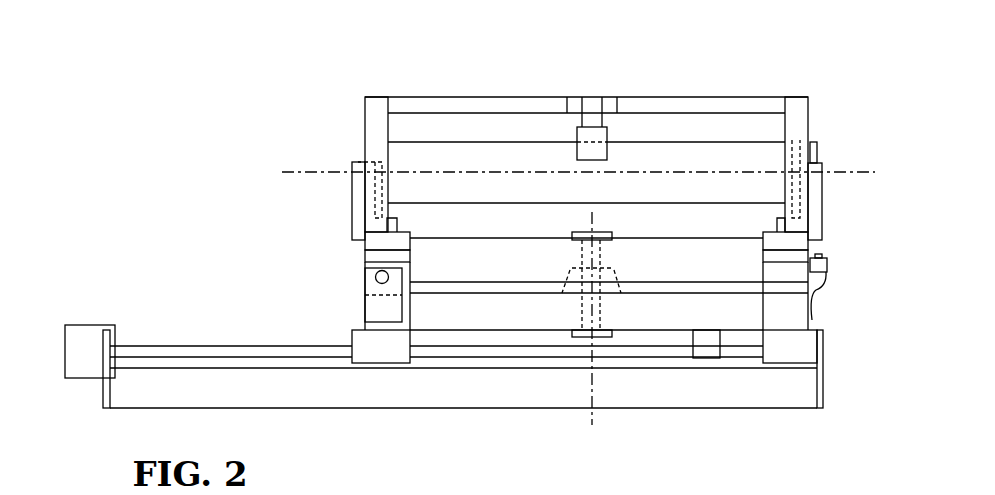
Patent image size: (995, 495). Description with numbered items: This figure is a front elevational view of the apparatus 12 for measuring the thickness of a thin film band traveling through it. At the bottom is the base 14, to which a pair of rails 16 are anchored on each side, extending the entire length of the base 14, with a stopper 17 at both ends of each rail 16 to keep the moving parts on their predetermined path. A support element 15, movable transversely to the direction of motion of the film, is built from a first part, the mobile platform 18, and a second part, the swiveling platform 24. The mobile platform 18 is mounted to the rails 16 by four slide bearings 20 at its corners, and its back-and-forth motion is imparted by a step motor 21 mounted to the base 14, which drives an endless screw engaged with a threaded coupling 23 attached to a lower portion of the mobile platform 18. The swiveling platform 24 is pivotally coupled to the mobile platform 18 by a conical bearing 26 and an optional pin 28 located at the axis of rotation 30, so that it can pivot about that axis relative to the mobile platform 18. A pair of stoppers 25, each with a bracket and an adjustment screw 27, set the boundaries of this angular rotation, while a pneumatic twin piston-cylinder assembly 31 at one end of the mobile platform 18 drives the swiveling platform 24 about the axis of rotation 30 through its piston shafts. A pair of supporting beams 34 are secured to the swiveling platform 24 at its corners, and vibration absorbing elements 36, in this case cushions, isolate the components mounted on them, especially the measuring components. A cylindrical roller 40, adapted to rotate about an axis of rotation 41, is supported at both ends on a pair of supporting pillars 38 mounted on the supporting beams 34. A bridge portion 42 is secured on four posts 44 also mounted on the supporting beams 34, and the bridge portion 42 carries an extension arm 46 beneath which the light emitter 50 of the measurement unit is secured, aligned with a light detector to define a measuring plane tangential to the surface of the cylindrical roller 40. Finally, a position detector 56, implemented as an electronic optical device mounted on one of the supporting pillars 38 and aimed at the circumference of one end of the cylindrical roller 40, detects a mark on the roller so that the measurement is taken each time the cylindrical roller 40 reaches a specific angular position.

The apparatus 12 is at (196, 80).
The base 14 is at (692, 385).
The support element 15 is at (812, 113).
The rails 16 is at (197, 350).
The stopper 17 is at (105, 393).
The mobile platform 18 is at (648, 317).
The slide bearings 20 is at (362, 340).
The step motor 21 is at (85, 337).
The threaded coupling 23 is at (708, 338).
The swiveling platform 24 is at (460, 260).
The stoppers 25 is at (368, 290).
The conical bearing 26 is at (577, 273).
The adjustment screw 27 is at (368, 276).
The pin 28 is at (580, 337).
The axis of rotation 30 is at (592, 432).
The pneumatic twin piston-cylinder assembly 31 is at (828, 277).
The supporting beams 34 is at (383, 240).
The vibration absorbing elements 36 is at (380, 255).
The supporting pillars 38 is at (357, 165).
The cylindrical roller 40 is at (678, 155).
The axis of rotation 41 is at (292, 172).
The bridge portion 42 is at (728, 103).
The posts 44 is at (377, 122).
The extension arm 46 is at (608, 105).
The light emitter 50 is at (583, 147).
The position detector 56 is at (815, 142).